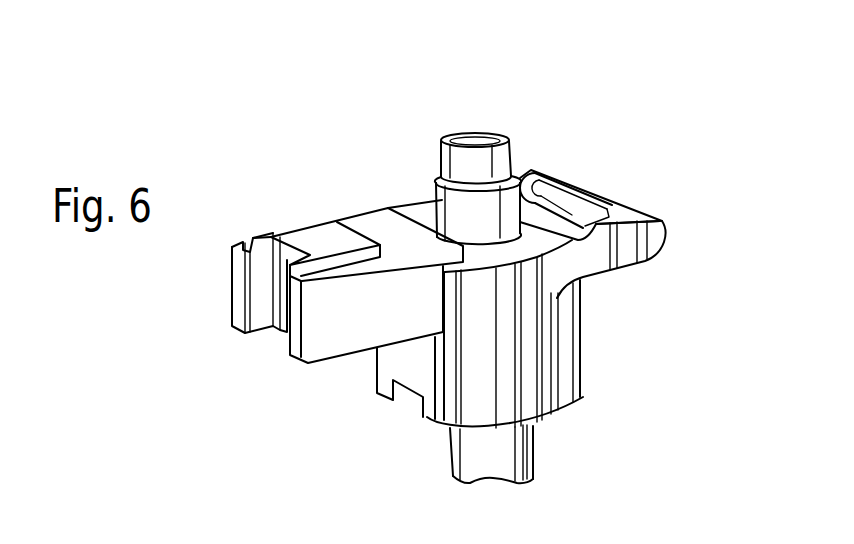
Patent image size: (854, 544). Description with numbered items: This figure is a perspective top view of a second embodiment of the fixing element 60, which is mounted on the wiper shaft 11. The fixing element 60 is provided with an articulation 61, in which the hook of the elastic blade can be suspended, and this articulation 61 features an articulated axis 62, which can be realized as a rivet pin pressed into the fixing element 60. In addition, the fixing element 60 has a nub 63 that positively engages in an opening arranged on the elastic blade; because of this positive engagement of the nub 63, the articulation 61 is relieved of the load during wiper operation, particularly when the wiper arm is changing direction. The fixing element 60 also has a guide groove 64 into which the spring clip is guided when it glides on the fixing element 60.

The wiper shaft 11 is at (475, 138).
The fixing element 60 is at (617, 394).
The articulation 61 is at (627, 179).
The articulated axis 62 is at (572, 195).
The nub 63 is at (317, 233).
The guide groove 64 is at (268, 345).